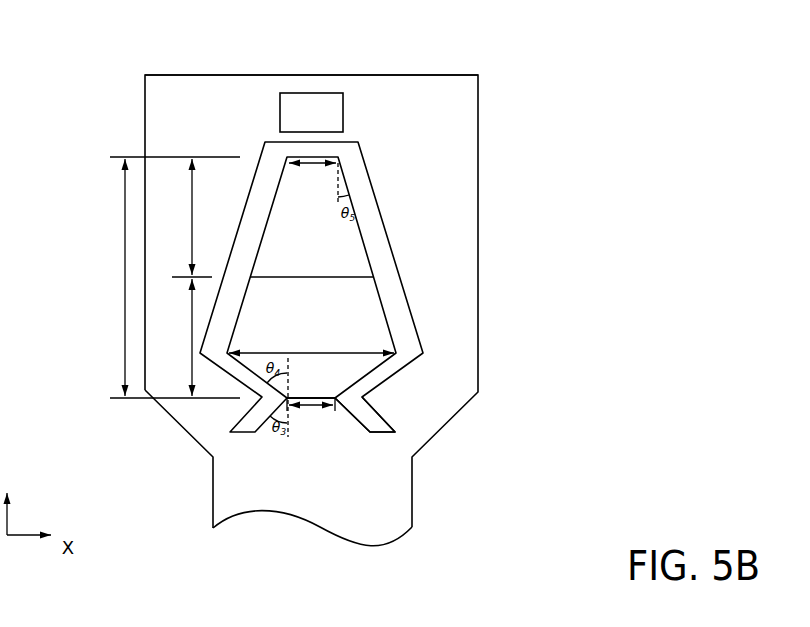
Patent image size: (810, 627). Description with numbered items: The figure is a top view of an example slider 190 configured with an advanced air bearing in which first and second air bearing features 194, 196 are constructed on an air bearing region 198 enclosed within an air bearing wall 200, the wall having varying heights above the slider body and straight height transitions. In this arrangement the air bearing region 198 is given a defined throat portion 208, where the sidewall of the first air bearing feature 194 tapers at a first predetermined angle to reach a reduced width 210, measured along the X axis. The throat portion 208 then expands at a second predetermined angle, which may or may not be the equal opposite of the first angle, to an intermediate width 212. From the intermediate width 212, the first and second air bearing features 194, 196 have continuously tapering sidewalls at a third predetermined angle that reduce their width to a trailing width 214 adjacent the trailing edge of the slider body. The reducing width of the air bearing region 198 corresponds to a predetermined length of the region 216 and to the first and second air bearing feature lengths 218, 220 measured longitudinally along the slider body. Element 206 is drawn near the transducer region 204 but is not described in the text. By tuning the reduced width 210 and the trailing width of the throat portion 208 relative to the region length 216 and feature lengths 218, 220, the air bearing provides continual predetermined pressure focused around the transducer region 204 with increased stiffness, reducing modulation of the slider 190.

The slider 190 is at (607, 72).
The first air bearing feature 194 is at (386, 321).
The second air bearing feature 196 is at (290, 216).
The air bearing region 198 is at (313, 445).
The air bearing wall 200 is at (376, 200).
The transducer region 204 is at (310, 73).
The heating element 206 is at (280, 108).
The throat portion 208 is at (335, 439).
The reduced width 210 is at (311, 414).
The intermediate width 212 is at (311, 341).
The trailing width 214 is at (312, 176).
The predetermined length of the region 216 is at (160, 277).
The first air bearing feature length 218 is at (171, 337).
The second air bearing feature length 220 is at (181, 218).